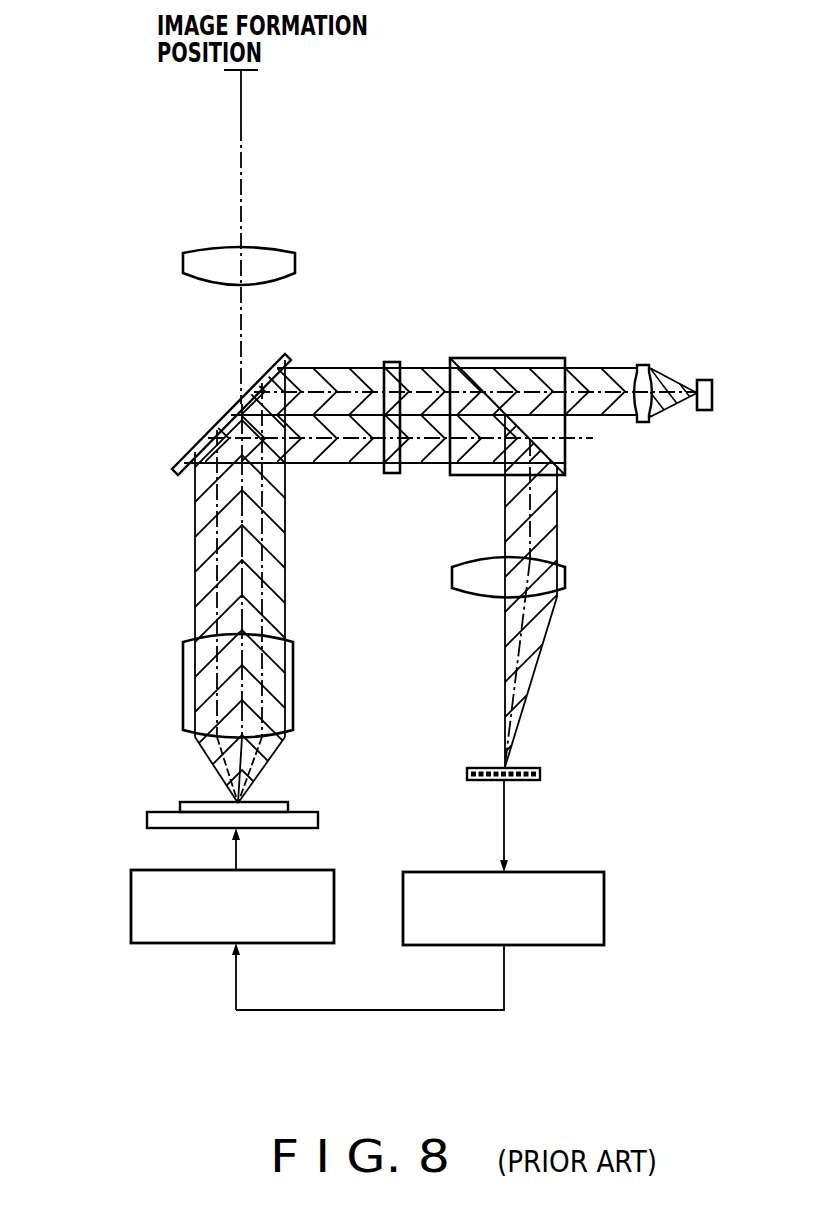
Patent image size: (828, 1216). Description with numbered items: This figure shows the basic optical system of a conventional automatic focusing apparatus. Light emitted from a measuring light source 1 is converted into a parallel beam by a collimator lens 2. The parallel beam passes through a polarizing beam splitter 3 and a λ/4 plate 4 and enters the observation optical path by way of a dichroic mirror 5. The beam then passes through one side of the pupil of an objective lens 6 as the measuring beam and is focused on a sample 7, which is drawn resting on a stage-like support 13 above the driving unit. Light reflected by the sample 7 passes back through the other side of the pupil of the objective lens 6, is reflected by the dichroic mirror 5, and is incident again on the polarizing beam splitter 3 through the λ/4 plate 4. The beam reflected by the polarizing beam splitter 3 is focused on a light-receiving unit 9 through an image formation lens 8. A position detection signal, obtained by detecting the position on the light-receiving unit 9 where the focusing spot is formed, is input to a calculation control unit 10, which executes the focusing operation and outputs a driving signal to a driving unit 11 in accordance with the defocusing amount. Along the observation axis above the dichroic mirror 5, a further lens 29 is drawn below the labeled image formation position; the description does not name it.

The measuring light source 1 is at (706, 380).
The collimator lens 2 is at (640, 365).
The polarizing beam splitter 3 is at (567, 452).
The λ/4 plate 4 is at (392, 362).
The dichroic mirror 5 is at (283, 361).
The objective lens 6 is at (183, 660).
The sample 7 is at (186, 803).
The image formation lens 8 is at (567, 578).
The light-receiving unit 9 is at (525, 763).
The calculation control unit 10 is at (604, 912).
The driving unit 11 is at (131, 916).
The stage 13 is at (147, 822).
The imaging lens 29 is at (215, 285).